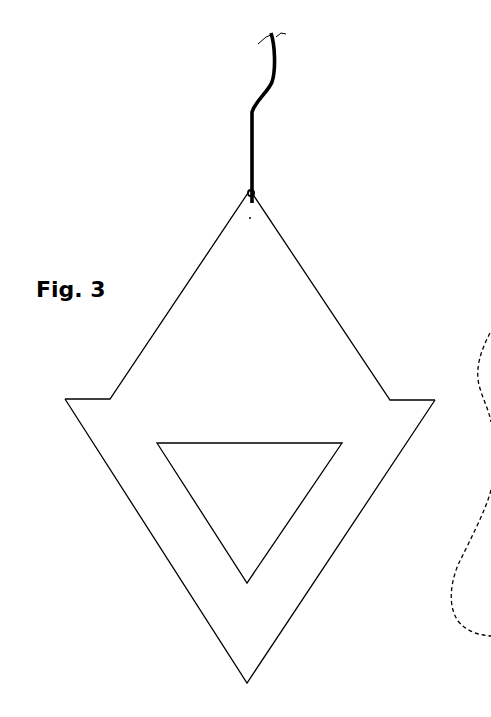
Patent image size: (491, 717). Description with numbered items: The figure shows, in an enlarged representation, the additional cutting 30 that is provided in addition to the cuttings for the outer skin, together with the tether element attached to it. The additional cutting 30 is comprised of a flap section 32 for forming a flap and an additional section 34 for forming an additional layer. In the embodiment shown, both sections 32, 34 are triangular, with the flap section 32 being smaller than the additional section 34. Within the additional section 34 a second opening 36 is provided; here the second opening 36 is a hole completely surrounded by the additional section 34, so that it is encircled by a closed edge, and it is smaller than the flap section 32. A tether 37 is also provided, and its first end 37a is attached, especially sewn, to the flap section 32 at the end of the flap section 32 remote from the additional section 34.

The additional cutting 30 is at (347, 249).
The flap section 32 is at (182, 322).
The additional section 34 is at (212, 587).
The second opening 36 is at (235, 493).
The tether 37 is at (255, 108).
The first end of the tether 37a is at (258, 195).